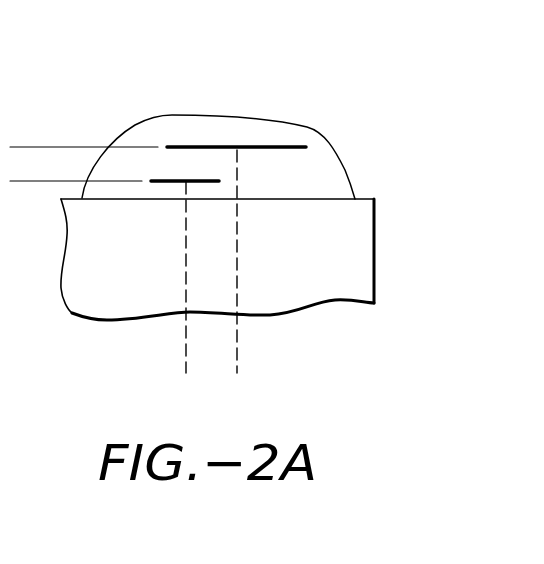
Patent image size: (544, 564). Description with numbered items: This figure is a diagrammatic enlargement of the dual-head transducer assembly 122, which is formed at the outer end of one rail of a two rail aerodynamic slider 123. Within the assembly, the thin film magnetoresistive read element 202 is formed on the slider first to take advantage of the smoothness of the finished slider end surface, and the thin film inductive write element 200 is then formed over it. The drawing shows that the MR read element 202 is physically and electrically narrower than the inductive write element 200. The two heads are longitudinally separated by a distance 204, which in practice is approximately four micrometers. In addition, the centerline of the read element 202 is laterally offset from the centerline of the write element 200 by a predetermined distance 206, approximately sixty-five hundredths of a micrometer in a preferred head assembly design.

The transducer assembly 122 is at (173, 97).
The aerodynamic slider 123 is at (330, 278).
The thin film inductive write element 200 is at (277, 150).
The magnetoresistive read element 202 is at (165, 185).
The distance 204 is at (29, 202).
The predetermined distance 206 is at (270, 352).